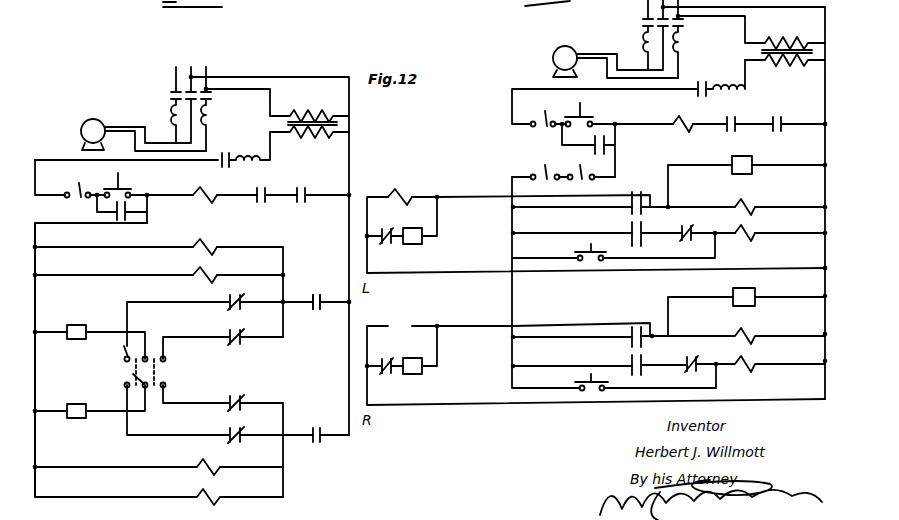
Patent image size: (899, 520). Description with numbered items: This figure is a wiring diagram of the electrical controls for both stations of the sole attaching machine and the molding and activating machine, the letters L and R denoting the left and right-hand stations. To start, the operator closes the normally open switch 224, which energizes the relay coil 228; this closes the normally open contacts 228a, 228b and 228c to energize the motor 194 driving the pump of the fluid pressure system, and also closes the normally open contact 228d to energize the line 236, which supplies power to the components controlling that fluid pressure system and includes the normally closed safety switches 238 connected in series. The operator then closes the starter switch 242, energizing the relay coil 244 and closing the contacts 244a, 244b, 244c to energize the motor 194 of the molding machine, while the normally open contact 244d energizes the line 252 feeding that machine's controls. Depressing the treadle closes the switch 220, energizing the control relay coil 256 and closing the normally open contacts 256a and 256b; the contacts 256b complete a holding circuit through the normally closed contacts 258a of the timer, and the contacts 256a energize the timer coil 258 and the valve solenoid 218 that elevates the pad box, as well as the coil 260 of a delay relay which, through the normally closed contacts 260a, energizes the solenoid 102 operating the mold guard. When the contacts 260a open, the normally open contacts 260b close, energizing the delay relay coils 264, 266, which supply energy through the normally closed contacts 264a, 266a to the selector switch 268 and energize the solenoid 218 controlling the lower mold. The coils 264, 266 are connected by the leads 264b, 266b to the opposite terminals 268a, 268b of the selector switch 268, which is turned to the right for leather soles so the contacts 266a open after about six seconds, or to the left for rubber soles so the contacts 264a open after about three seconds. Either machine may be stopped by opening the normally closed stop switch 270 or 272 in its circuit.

The motor 194 is at (80, 120).
The contact 244a is at (175, 102).
The contact 244b is at (193, 108).
The contact 244c is at (209, 101).
The stop switch 272 is at (77, 189).
The starter switch 242 is at (121, 185).
The relay coil 244 is at (204, 195).
The contact 244d is at (113, 214).
The coil of delay relay 264 is at (205, 245).
The coil of delay relay 266 is at (205, 273).
The line 252 is at (38, 299).
The solenoid 218 is at (76, 324).
The lead 264b is at (140, 303).
The contact 264a is at (246, 297).
The selector switch 268 is at (147, 341).
The lead 266b is at (194, 336).
The contact 266a is at (236, 333).
The contact 260b is at (325, 283).
The terminal 268a is at (124, 361).
The terminal 268b is at (165, 361).
The coil of delay relay 260 is at (405, 195).
The contact 260a is at (388, 232).
The solenoid 102 is at (418, 237).
The contact 228a is at (648, 22).
The contact 228b is at (660, 23).
The contact 228c is at (681, 19).
The stop switch 270 is at (547, 118).
The switch 224 is at (590, 117).
The relay coil 228 is at (678, 122).
The contact 228d is at (606, 147).
The safety switch 238 is at (578, 173).
The contact 256a is at (645, 201).
The coil of timer 258 is at (750, 206).
The switch 220 is at (596, 245).
The contact 258a is at (696, 233).
The control relay coil 256 is at (752, 233).
The contact 256b is at (638, 231).
The line 236 is at (514, 304).